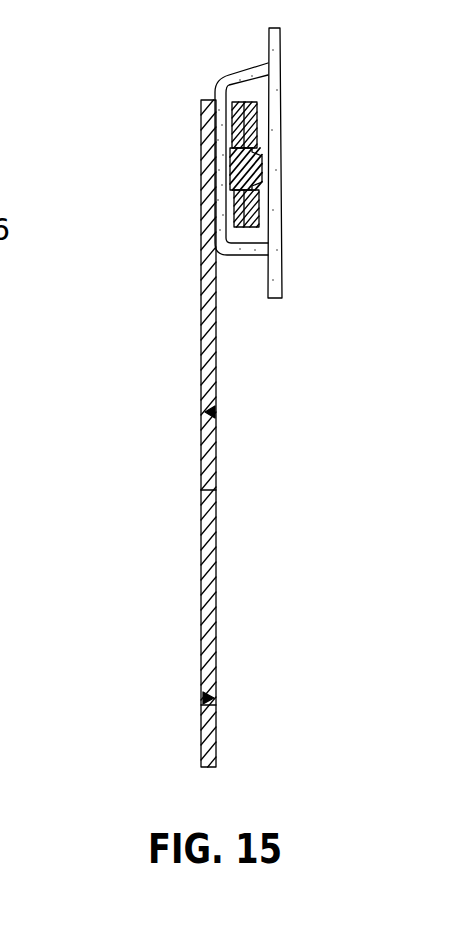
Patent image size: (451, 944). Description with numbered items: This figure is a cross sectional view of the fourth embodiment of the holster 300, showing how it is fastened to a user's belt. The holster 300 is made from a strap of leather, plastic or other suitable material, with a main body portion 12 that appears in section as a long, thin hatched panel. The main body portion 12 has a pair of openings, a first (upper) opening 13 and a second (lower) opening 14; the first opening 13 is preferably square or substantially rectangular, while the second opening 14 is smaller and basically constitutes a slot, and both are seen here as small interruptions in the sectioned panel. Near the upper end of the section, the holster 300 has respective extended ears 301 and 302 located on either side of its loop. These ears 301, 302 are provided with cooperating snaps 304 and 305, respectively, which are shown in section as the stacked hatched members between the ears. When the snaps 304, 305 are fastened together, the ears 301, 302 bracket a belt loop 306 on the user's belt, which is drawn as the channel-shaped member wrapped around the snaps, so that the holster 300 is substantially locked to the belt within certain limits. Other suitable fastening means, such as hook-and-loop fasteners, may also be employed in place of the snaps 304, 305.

The main body portion 12 is at (201, 542).
The first opening 13 is at (215, 416).
The second opening 14 is at (217, 698).
The holster 300 is at (155, 346).
The extended ear 301 is at (232, 138).
The extended ear 302 is at (257, 113).
The snap 304 is at (232, 172).
The snap 305 is at (268, 180).
The belt loop 306 is at (223, 82).